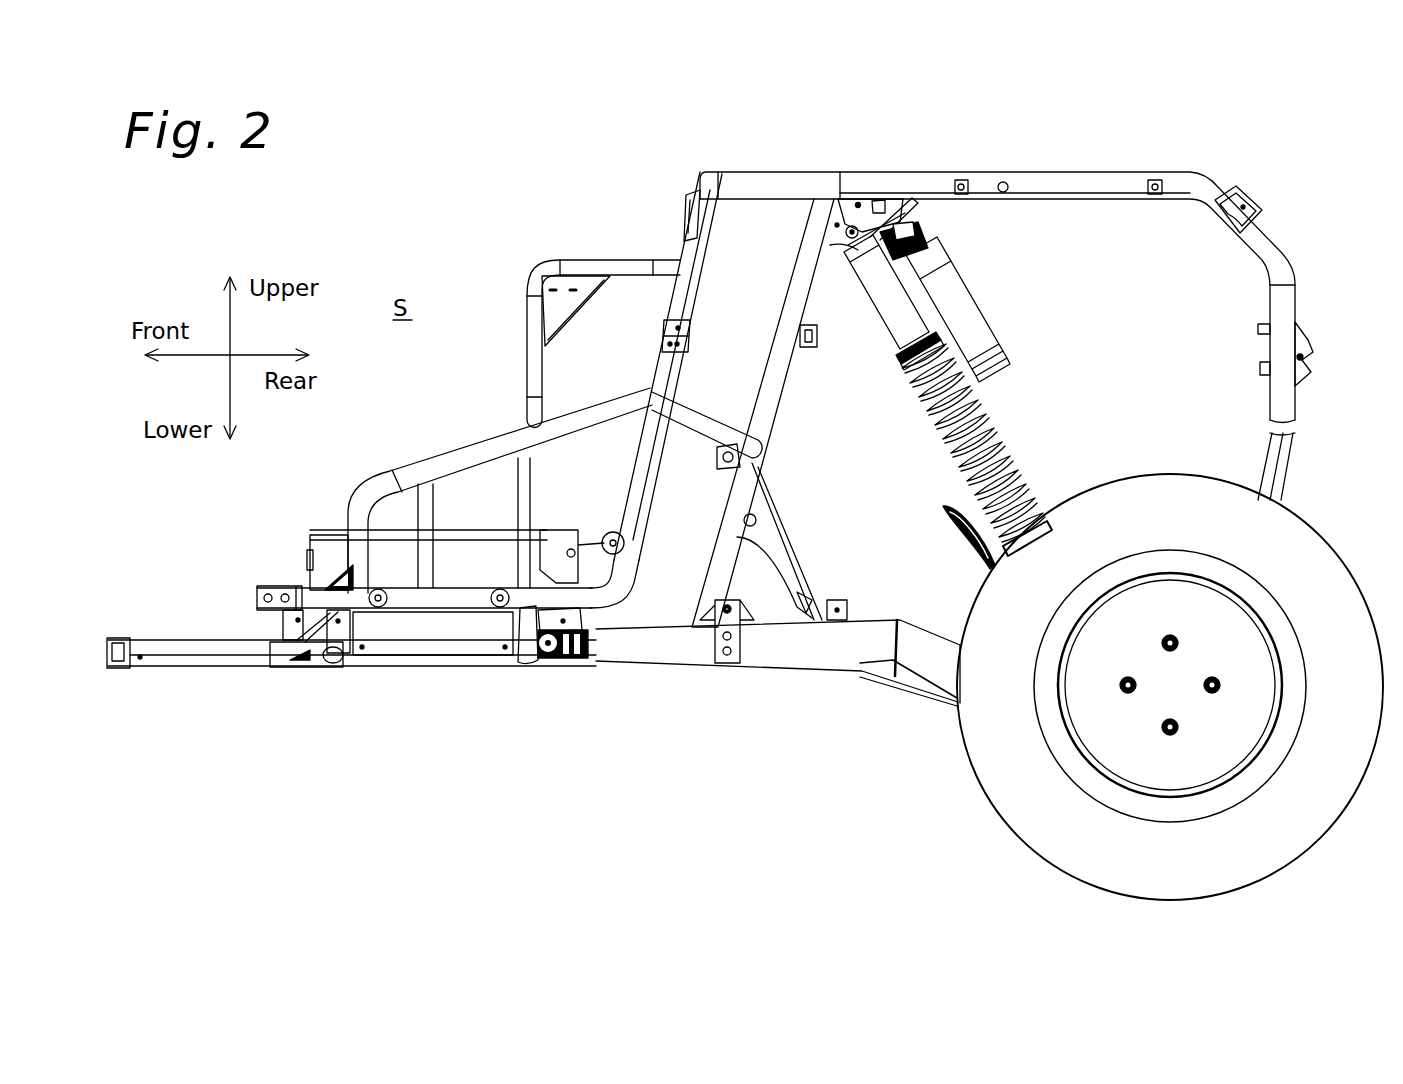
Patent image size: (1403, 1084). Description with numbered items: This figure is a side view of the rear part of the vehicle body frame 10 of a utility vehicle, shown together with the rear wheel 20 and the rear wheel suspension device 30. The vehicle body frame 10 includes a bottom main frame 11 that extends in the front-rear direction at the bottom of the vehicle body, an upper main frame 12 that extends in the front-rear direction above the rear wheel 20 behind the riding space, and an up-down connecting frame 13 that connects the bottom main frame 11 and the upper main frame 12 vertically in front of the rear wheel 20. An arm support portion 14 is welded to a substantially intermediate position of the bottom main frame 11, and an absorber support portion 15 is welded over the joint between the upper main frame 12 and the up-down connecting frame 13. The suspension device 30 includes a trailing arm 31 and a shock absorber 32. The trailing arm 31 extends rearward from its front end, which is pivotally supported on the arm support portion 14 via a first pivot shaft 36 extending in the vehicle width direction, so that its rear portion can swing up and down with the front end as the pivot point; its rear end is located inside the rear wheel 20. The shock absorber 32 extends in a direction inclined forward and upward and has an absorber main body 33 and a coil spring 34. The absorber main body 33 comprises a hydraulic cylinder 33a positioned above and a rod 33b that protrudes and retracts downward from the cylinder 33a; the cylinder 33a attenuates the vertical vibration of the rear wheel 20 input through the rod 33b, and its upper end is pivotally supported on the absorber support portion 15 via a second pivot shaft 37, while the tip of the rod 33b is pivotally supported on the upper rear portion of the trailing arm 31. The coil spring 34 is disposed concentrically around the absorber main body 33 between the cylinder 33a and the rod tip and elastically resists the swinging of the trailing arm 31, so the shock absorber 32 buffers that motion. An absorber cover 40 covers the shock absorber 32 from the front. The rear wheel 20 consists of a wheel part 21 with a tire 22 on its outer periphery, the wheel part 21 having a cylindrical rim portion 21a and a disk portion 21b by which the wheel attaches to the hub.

The vehicle body frame 10 is at (562, 228).
The bottom main frame 11 is at (430, 664).
The upper main frame 12 is at (1040, 182).
The up-down connecting frame 13 is at (788, 317).
The arm support portion 14 is at (541, 665).
The absorber support portion 15 is at (854, 206).
The rear wheel 20 is at (1307, 512).
The wheel part 21 is at (1100, 721).
The rim portion 21a is at (1058, 683).
The disk portion 21b is at (1192, 698).
The tire 22 is at (1047, 824).
The rear wheel suspension device 30 is at (1066, 302).
The trailing arm 31 is at (679, 657).
The shock absorber 32 is at (842, 424).
The absorber main body 33 is at (888, 318).
The cylinder 33a is at (985, 435).
The rod 33b is at (1037, 494).
The coil spring 34 is at (963, 493).
The first pivot shaft 36 is at (552, 668).
The second pivot shaft 37 is at (842, 235).
The absorber cover 40 is at (968, 537).